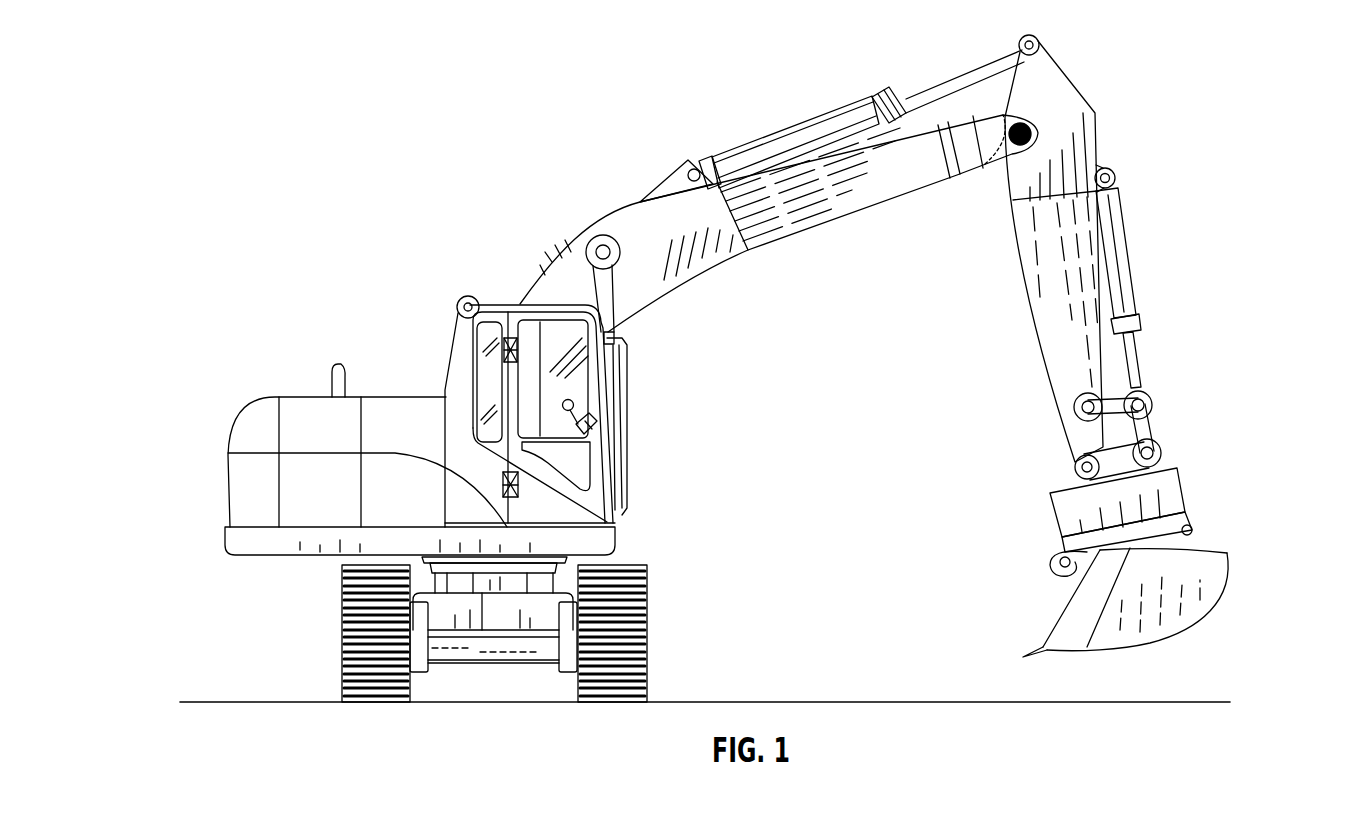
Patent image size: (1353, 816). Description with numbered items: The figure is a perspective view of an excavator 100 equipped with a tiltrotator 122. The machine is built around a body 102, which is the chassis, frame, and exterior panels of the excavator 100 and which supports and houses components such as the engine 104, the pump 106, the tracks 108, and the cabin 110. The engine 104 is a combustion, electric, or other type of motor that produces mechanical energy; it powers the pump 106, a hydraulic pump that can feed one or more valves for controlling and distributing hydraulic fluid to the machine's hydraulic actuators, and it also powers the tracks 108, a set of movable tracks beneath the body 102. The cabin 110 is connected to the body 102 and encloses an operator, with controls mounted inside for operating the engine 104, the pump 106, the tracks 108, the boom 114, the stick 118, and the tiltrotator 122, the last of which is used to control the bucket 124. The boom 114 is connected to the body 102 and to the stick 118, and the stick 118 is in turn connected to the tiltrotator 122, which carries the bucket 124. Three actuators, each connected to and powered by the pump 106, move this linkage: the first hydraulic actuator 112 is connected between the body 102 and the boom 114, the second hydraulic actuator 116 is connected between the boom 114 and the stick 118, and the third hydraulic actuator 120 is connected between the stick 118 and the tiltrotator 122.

The excavator 100 is at (324, 175).
The body 102 is at (484, 271).
The engine 104 is at (427, 397).
The pump 106 is at (272, 397).
The tracks 108 is at (343, 643).
The cabin 110 is at (573, 375).
The first hydraulic actuator 112 is at (598, 292).
The boom 114 is at (833, 223).
The second hydraulic actuator 116 is at (793, 137).
The stick 118 is at (1048, 294).
The third hydraulic actuator 120 is at (1133, 365).
The tiltrotator 122 is at (1036, 512).
The bucket 124 is at (1228, 577).